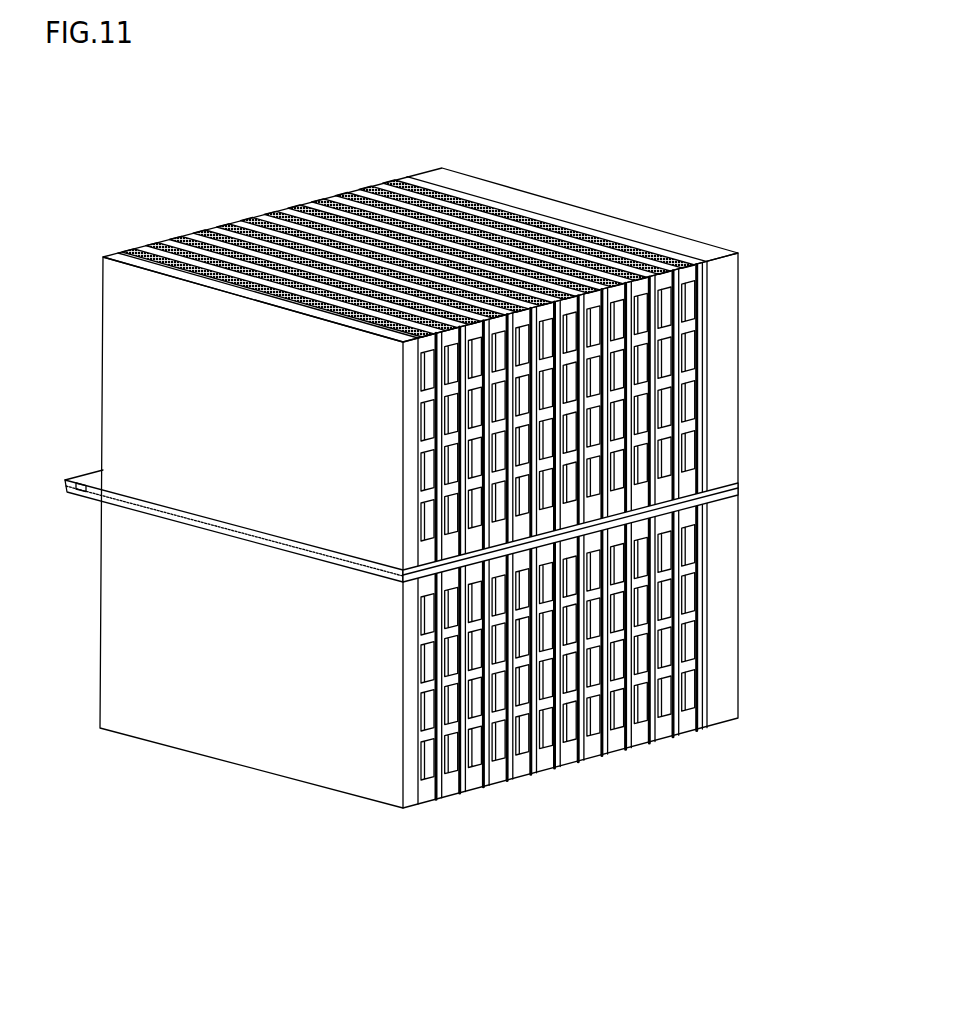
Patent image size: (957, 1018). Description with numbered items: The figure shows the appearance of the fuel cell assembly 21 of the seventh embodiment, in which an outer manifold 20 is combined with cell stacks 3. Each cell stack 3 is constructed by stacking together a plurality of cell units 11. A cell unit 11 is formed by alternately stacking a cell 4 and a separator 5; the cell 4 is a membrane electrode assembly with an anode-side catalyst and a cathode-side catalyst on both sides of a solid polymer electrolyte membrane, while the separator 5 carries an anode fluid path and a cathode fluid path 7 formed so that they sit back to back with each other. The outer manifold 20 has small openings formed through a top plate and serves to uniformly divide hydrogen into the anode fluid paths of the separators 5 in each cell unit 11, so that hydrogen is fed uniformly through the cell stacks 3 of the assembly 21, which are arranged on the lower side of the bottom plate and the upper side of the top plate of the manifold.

The cell stack 3 is at (125, 358).
The cell 4 is at (586, 378).
The separator 5 is at (678, 350).
The cathode fluid path 7 is at (640, 313).
The cell unit 11 is at (553, 383).
The outer manifold 20 is at (740, 490).
The stacked assembly 21 is at (792, 205).